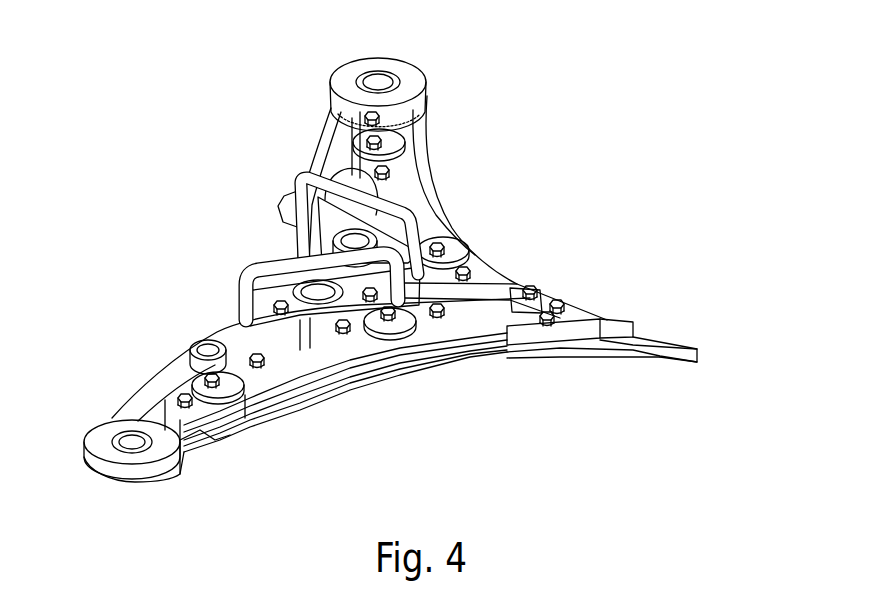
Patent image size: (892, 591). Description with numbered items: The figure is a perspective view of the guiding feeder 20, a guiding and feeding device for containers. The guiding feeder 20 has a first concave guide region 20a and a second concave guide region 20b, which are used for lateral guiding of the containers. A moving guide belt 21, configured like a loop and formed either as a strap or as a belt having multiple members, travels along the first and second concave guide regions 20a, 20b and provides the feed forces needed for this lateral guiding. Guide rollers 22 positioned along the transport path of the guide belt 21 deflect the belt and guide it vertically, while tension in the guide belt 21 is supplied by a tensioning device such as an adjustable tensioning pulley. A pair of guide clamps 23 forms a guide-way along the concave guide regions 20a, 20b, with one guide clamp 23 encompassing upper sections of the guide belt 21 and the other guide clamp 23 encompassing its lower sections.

The guiding feeder 20 is at (422, 283).
The first concave guide region 20a is at (486, 221).
The second concave guide region 20b is at (390, 408).
The guide belt 21 is at (187, 450).
The guide rollers 22 is at (347, 78).
The guide clamps 23 is at (412, 158).